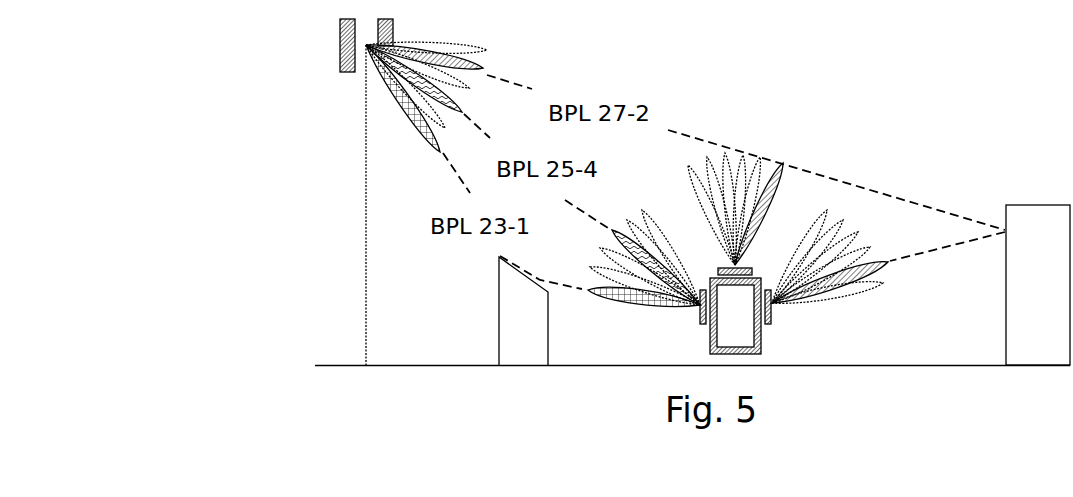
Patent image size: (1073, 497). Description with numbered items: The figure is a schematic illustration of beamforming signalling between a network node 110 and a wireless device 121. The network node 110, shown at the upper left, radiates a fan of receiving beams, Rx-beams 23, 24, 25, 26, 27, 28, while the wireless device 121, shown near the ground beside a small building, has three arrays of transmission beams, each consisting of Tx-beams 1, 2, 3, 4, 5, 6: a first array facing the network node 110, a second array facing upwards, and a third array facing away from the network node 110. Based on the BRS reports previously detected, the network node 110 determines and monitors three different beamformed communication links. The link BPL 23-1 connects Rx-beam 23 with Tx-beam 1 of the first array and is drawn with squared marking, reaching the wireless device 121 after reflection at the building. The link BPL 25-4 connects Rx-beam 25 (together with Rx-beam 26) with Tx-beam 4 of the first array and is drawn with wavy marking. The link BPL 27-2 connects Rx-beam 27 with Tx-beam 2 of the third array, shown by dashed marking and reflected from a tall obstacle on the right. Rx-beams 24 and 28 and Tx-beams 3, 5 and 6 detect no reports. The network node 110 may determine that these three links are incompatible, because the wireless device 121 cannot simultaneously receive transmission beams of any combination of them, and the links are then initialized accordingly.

The network node 110 is at (340, 44).
The wireless device 121 is at (713, 313).
The Rx-beam 23 is at (403, 102).
The Rx-beam 24 is at (415, 93).
The Rx-beam 25 is at (423, 84).
The Rx-beam 26 is at (431, 75).
The Rx-beam 27 is at (432, 65).
The Rx-beam 28 is at (436, 53).
The Tx-beam 1 is at (745, 226).
The Tx-beam 2 is at (734, 221).
The Tx-beam 3 is at (732, 218).
The Tx-beam 4 is at (740, 218).
The Tx-beam 5 is at (732, 221).
The Tx-beam 6 is at (732, 224).